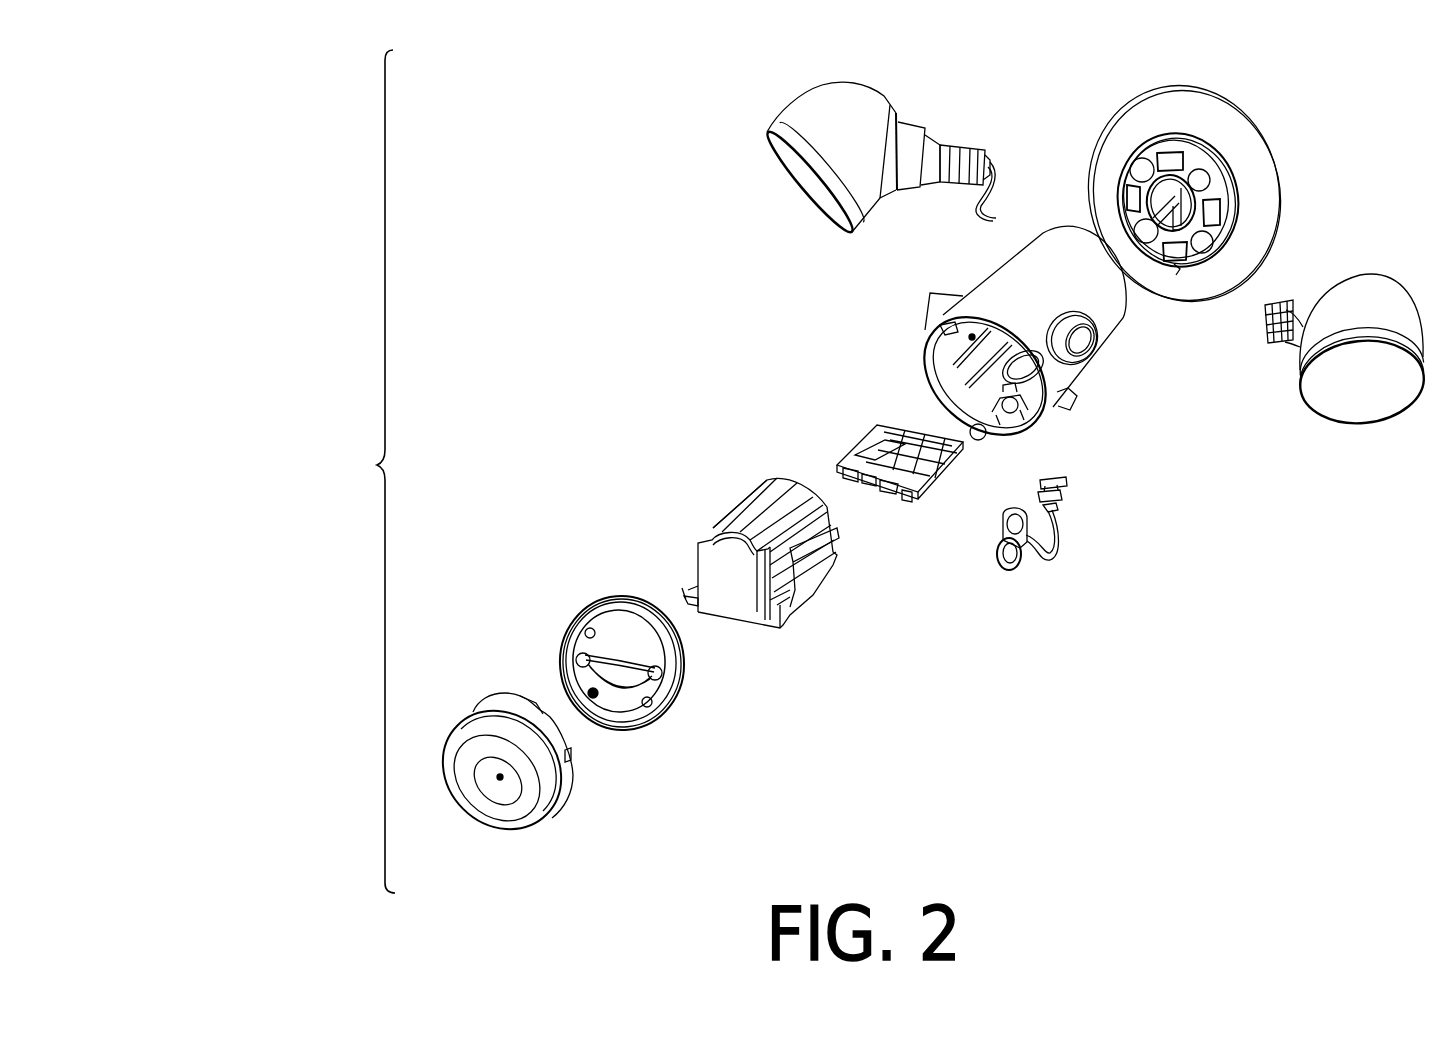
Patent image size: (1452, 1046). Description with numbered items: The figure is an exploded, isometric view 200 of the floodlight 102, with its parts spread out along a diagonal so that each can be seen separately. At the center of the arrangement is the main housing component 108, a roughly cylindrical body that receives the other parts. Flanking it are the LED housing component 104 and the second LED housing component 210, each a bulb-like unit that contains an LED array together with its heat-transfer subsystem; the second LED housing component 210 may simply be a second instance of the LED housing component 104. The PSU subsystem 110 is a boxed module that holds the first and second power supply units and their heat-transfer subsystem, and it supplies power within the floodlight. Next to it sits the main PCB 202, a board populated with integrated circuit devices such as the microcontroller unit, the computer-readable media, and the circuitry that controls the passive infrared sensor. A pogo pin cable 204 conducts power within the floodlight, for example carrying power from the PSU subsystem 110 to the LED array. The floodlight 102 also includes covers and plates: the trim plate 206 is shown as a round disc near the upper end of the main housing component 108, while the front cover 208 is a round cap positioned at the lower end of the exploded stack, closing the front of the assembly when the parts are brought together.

The exploded isometric view 200 is at (229, 81).
The floodlight 102 is at (340, 467).
The LED housing component 104 is at (1353, 275).
The main housing component 108 is at (980, 285).
The PSU subsystem 110 is at (732, 507).
The main PCB 202 is at (857, 445).
The pogo pin cable 204 is at (1058, 552).
The trim plate 206 is at (1152, 90).
The front cover 208 is at (522, 698).
The second LED housing component 210 is at (807, 100).